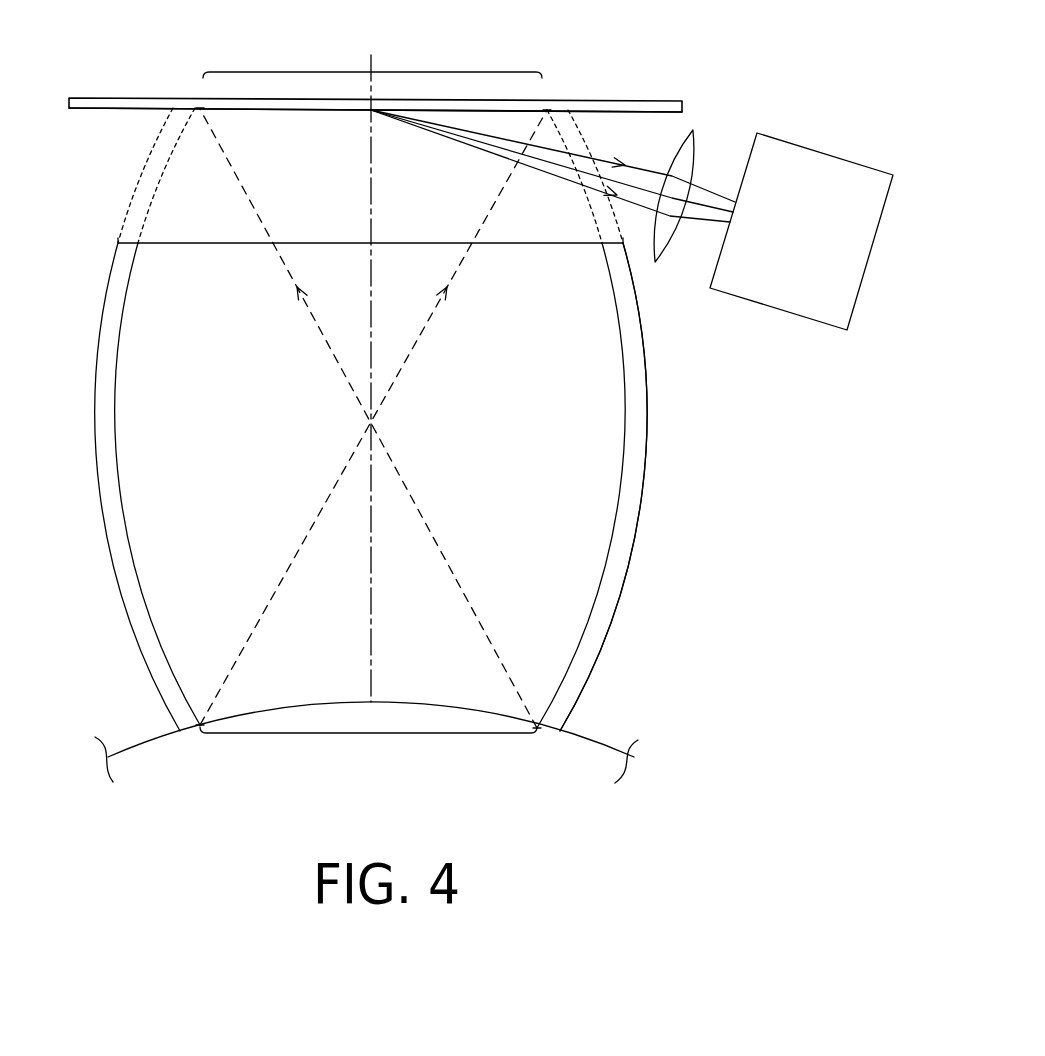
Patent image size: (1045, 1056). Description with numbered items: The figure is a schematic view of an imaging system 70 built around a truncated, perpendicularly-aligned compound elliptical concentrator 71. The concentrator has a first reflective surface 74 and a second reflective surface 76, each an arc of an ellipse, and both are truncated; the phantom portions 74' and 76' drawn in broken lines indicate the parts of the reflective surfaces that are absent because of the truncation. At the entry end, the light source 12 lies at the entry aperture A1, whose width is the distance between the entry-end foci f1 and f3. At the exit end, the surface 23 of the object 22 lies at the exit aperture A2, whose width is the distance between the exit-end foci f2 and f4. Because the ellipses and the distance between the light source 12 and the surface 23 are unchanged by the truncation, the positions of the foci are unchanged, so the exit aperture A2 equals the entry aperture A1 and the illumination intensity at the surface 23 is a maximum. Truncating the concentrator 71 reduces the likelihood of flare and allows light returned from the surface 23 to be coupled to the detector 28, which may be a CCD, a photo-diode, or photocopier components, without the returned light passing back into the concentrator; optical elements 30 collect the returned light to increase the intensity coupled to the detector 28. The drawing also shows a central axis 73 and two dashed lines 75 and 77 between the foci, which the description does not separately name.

The object 22 is at (116, 98).
The surface 23 is at (127, 109).
The phantom portion 74' is at (128, 175).
The exit-end focus f4 is at (200, 112).
The exit aperture A2 is at (373, 72).
The exit-end focus f2 is at (547, 113).
The optical elements 30 is at (697, 147).
The detector 28 is at (775, 282).
The phantom portion 76' is at (580, 178).
The imaging system 70 is at (83, 295).
The optical axis 73 is at (372, 300).
The first reflective surface 74 is at (123, 487).
The second reflective surface 76 is at (630, 487).
The compound elliptical concentrator 71 is at (635, 528).
The light path 75 is at (292, 560).
The light path 77 is at (433, 537).
The entry-end focus f3 is at (200, 725).
The entry-end focus f1 is at (537, 728).
The light source 12 is at (155, 732).
The entry aperture A1 is at (371, 733).